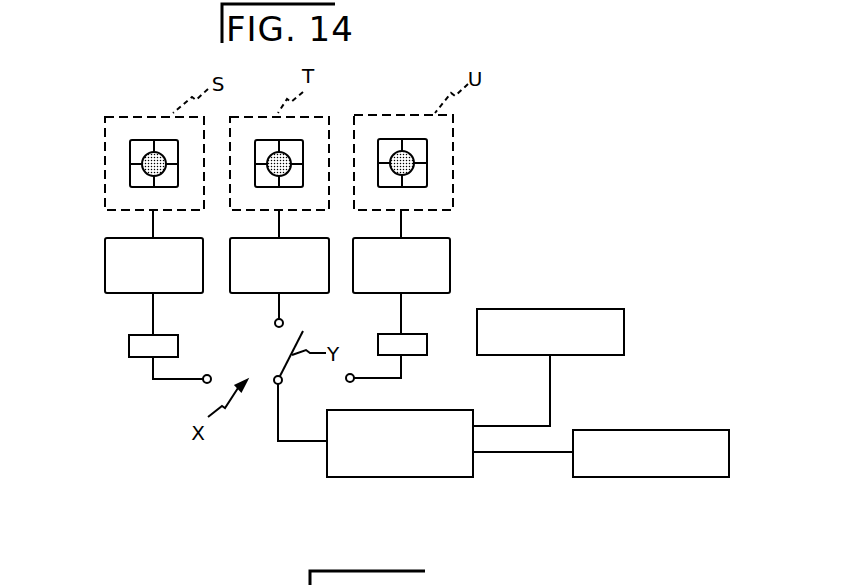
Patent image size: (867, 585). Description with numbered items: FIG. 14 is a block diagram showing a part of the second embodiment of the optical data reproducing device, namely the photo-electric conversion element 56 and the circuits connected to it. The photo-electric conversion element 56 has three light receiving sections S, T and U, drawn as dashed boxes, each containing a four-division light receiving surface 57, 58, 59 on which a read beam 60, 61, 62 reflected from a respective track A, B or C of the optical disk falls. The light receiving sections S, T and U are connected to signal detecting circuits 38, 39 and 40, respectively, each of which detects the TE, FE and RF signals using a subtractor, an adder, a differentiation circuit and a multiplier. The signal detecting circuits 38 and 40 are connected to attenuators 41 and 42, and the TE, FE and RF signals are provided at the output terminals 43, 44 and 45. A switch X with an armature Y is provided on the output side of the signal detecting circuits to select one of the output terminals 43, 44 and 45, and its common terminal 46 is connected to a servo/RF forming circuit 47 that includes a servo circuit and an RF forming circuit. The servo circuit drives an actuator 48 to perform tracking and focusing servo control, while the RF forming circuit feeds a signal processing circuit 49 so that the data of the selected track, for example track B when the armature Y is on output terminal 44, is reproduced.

The signal detecting circuit 38 is at (128, 270).
The signal detecting circuit 39 is at (262, 289).
The signal detecting circuit 40 is at (445, 263).
The attenuator 41 is at (118, 337).
The attenuator 42 is at (434, 318).
The output terminal 43 is at (229, 358).
The output terminal 44 is at (313, 315).
The output terminal 45 is at (385, 388).
The common terminal 46 is at (305, 368).
The servo/RF forming circuit 47 is at (426, 424).
The actuator 48 is at (550, 300).
The signal processing circuit 49 is at (651, 428).
The photo-electric conversion element 56 is at (526, 98).
The four-division light receiving surface 57 is at (144, 127).
The four-division light receiving surface 58 is at (273, 124).
The four-division light receiving surface 59 is at (410, 123).
The read beam 60 is at (107, 151).
The read beam 61 is at (316, 127).
The read beam 62 is at (452, 161).